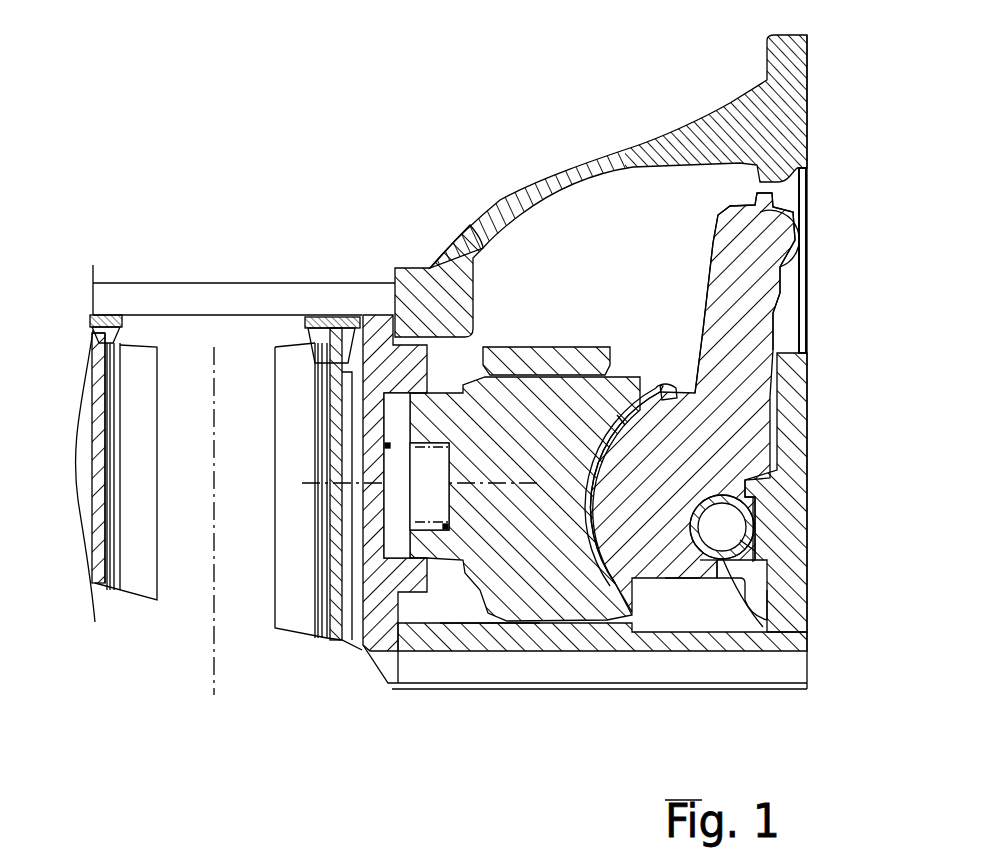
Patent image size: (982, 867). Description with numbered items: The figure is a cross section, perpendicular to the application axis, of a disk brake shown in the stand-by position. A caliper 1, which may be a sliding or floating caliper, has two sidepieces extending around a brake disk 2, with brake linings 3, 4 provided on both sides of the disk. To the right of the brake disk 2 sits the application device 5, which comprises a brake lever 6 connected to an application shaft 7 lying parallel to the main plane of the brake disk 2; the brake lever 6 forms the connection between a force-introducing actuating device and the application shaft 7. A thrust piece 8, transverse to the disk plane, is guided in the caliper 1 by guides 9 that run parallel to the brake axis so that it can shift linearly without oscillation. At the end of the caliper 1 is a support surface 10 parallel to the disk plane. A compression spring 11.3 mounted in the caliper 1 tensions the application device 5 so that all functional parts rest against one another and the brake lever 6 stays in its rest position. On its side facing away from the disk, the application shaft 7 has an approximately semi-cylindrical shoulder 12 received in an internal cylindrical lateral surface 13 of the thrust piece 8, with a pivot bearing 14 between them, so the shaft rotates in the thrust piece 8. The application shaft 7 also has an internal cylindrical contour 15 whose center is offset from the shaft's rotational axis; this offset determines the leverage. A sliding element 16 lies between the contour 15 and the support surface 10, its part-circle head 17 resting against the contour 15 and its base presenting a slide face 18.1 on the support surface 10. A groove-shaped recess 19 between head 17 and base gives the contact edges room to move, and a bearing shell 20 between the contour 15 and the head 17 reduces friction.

The caliper 1 is at (512, 365).
The brake disk 2 is at (189, 351).
The brake lining 3 is at (303, 600).
The brake lining 4 is at (143, 572).
The application device 5 is at (581, 216).
The brake lever 6 is at (737, 225).
The application shaft 7 is at (659, 547).
The thrust piece 8 is at (570, 590).
The guides 9 is at (525, 368).
The support surface 10 is at (757, 512).
The compression spring 11.3 is at (425, 527).
The shoulder 12 is at (660, 404).
The internal cylindrical lateral surface 13 is at (618, 418).
The pivot bearing 14 is at (658, 388).
The internal cylindrical contour 15 is at (678, 560).
The sliding element 16 is at (753, 530).
The head 17 is at (697, 523).
The slide face 18.1 is at (755, 551).
The groove-shaped recess 19 is at (770, 590).
The bearing shell 20 is at (720, 557).